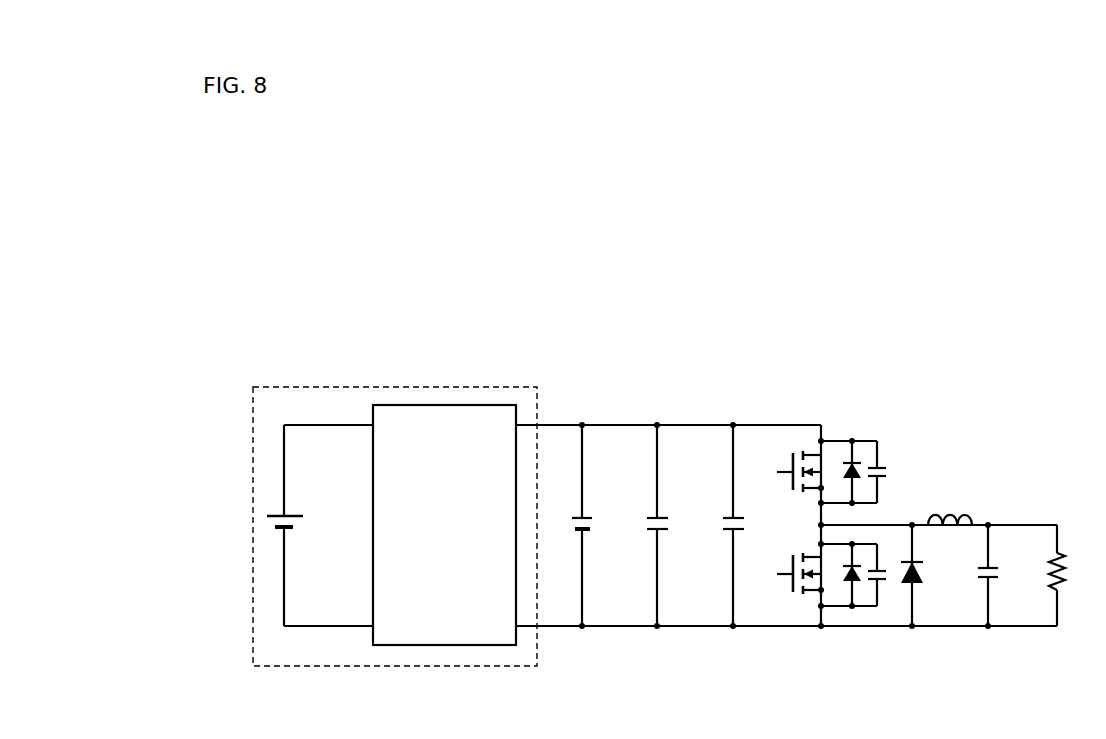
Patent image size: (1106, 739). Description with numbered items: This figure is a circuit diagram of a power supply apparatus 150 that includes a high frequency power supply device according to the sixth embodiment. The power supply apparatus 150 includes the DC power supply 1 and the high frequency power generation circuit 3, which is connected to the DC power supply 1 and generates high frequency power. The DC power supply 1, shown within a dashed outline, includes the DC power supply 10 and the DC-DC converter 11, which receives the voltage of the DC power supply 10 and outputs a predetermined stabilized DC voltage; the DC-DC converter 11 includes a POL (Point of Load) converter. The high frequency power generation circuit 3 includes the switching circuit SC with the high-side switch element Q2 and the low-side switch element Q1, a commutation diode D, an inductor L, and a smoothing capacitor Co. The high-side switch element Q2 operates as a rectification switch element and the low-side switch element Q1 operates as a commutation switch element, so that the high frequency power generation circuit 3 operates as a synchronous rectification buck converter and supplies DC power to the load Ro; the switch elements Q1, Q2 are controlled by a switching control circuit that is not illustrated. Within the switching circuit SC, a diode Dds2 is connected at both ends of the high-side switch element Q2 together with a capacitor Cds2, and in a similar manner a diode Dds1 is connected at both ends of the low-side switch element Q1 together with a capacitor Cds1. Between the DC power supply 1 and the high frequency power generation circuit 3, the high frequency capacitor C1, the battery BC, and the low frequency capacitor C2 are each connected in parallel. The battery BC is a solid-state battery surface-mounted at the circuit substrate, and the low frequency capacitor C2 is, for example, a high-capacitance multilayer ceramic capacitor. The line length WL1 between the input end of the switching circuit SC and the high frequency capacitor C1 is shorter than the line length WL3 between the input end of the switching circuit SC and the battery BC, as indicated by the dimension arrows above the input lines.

The power supply apparatus 150 is at (337, 278).
The DC power supply 1 is at (378, 387).
The DC power supply 10 is at (265, 522).
The DC-DC converter 11 is at (443, 404).
The high frequency power generation circuit 3 is at (1027, 310).
The switching circuit SC is at (888, 360).
The battery BC is at (562, 525).
The high frequency capacitor C1 is at (713, 525).
The low frequency capacitor C2 is at (638, 525).
The line length WL1 is at (813, 399).
The line length WL3 is at (813, 413).
The low-side switch element Q1 is at (787, 570).
The high-side switch element Q2 is at (787, 467).
The diode Dds1 is at (842, 588).
The diode Dds2 is at (840, 474).
The capacitor Cds1 is at (871, 588).
The capacitor Cds2 is at (890, 473).
The inductor L is at (950, 507).
The commutation diode D is at (923, 577).
The smoothing capacitor Co is at (1005, 577).
The load Ro is at (1076, 573).